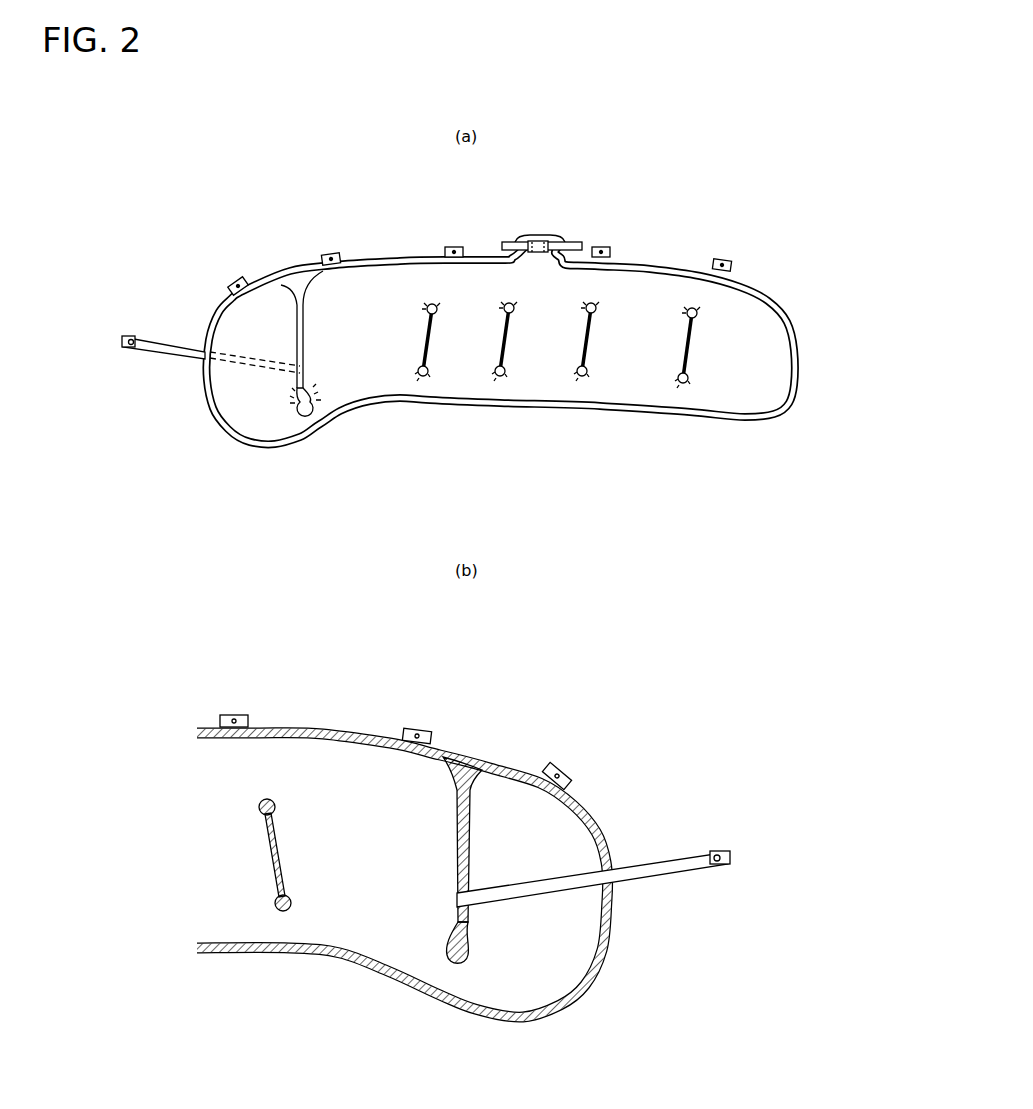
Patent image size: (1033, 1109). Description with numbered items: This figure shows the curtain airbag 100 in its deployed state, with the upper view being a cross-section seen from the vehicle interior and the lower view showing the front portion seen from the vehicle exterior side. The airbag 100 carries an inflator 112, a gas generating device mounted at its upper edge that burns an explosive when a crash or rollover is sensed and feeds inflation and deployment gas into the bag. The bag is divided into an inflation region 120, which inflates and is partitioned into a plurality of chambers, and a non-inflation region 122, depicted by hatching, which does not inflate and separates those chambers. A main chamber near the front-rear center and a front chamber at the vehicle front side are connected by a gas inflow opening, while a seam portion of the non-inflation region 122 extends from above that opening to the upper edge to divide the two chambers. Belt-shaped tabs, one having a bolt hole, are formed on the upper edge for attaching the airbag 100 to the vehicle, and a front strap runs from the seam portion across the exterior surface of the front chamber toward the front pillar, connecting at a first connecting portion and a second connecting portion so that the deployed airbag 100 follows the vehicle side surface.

The airbag 100 is at (282, 250).
The inflator 112 is at (572, 237).
The inflation region 120 is at (650, 287).
The non-inflation region 122 is at (760, 277).